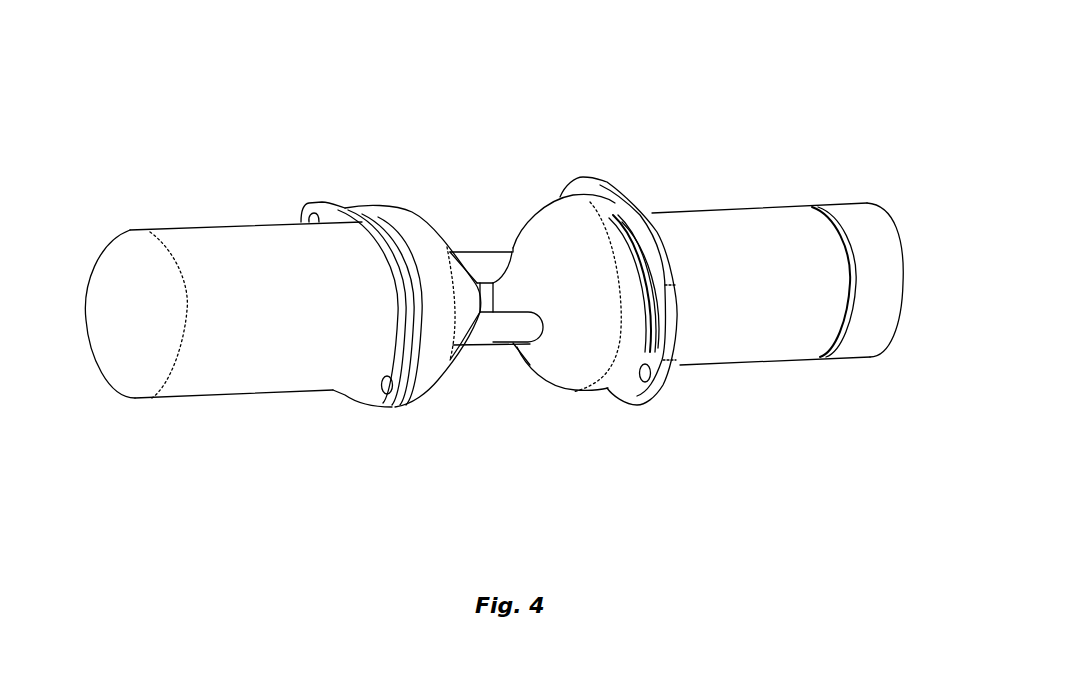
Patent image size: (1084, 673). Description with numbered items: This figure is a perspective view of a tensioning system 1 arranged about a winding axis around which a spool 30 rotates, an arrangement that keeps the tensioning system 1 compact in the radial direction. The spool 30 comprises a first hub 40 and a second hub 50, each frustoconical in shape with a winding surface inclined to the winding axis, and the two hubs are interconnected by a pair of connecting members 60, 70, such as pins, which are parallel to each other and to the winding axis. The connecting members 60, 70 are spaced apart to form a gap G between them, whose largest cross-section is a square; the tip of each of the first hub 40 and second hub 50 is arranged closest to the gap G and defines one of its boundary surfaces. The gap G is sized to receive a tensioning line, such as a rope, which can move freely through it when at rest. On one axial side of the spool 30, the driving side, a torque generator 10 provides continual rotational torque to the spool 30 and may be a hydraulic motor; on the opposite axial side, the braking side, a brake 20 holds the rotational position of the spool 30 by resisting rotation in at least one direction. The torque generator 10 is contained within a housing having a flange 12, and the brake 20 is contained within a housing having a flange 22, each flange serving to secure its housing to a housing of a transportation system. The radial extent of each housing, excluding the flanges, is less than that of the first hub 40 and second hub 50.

The tensioning system 1 is at (758, 89).
The torque generator 10 is at (812, 383).
The flange 12 is at (611, 185).
The brake 20 is at (208, 410).
The flange 22 is at (371, 405).
The spool 30 is at (446, 153).
The first hub 40 is at (531, 375).
The second hub 50 is at (441, 390).
The connecting member 60 is at (481, 254).
The connecting member 70 is at (491, 347).
The gap G is at (490, 293).